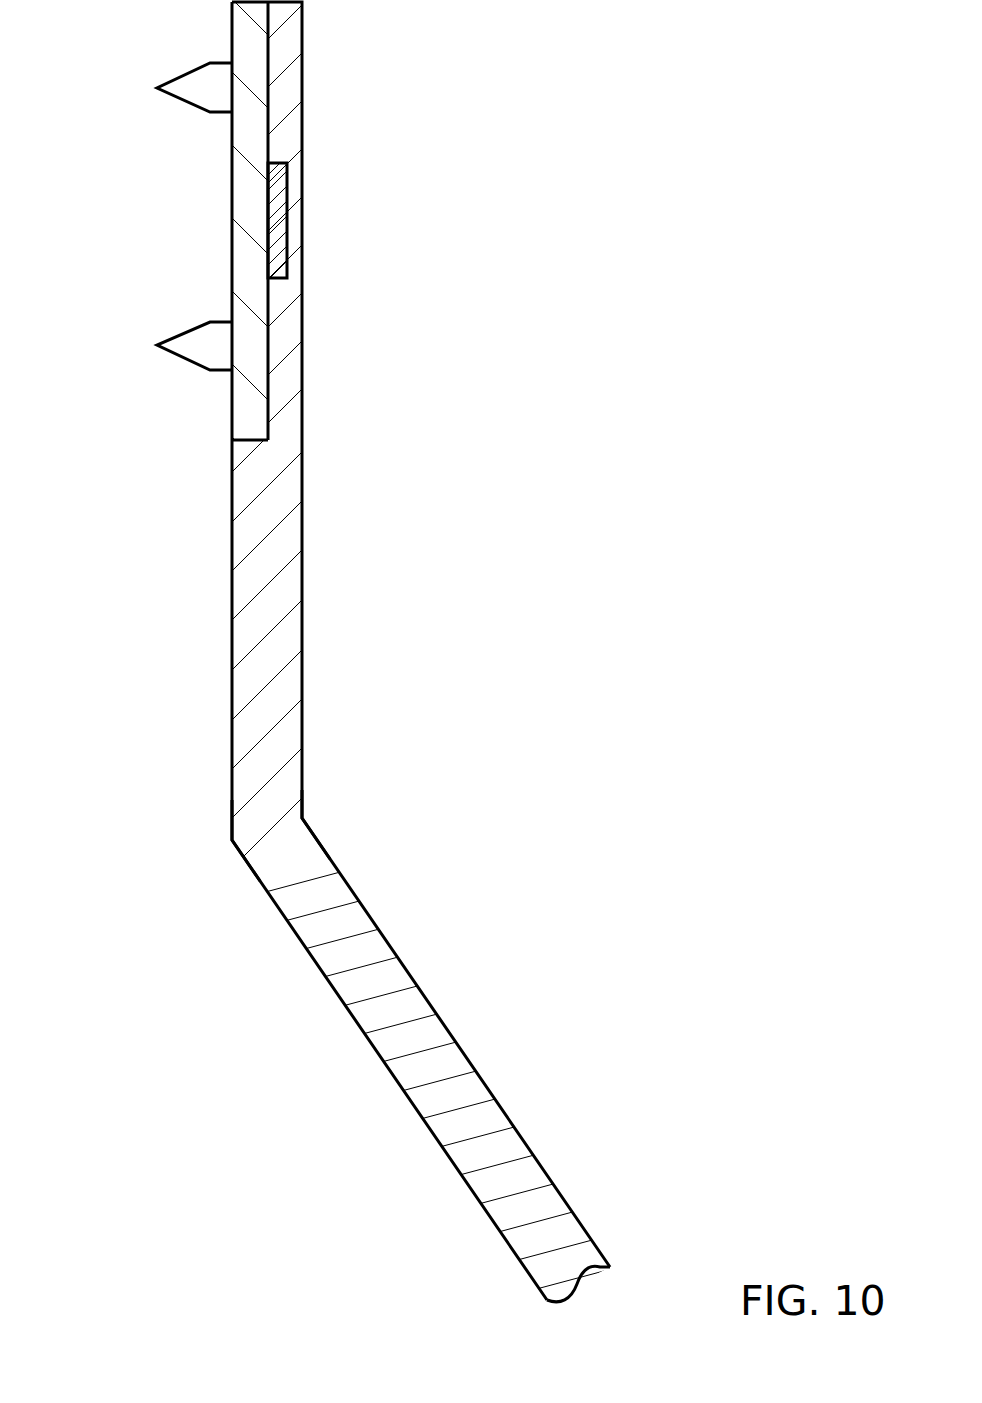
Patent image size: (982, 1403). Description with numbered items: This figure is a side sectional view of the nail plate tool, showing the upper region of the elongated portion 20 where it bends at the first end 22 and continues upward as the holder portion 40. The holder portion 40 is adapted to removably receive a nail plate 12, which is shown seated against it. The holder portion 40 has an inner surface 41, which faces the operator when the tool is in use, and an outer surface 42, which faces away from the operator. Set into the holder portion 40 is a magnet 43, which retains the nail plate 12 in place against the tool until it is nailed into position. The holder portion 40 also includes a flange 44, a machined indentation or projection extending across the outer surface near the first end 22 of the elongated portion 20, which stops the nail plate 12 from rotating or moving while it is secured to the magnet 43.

The nail plate 12 is at (232, 38).
The elongated portion 20 is at (397, 1083).
The first end 22 is at (310, 830).
The holder portion 40 is at (302, 528).
The inner surface 41 is at (302, 97).
The outer surface 42 is at (268, 118).
The magnet 43 is at (278, 220).
The flange 44 is at (250, 439).